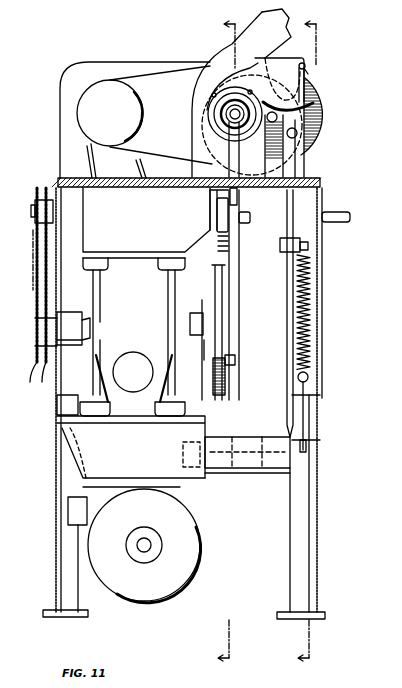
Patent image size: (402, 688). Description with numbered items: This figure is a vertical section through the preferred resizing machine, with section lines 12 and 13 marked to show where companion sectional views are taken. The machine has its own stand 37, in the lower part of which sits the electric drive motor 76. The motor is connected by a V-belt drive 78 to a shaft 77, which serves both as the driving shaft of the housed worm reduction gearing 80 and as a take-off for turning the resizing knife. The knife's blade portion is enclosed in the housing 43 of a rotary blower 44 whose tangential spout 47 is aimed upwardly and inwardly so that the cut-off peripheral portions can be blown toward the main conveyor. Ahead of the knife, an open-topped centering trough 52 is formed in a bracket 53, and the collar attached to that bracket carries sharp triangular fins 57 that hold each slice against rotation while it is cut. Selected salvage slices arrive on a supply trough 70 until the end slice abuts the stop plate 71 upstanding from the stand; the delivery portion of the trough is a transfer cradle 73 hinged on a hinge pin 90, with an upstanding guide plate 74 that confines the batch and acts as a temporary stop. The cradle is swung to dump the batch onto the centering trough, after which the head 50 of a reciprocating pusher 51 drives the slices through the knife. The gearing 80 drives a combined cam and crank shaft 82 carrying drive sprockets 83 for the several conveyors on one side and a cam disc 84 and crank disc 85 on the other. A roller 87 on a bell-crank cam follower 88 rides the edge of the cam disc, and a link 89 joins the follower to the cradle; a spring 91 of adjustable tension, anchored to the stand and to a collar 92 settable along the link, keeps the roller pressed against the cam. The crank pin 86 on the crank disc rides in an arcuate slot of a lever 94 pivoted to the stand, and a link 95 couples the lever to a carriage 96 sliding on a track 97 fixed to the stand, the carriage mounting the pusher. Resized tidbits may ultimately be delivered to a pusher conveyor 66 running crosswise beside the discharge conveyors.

The section line 12- 12 is at (311, 344).
The section line 13- 13 is at (230, 344).
The stand 37 is at (55, 516).
The housing 43 is at (186, 103).
The rotary blower 44 is at (177, 136).
The tangential spout 47 is at (262, 40).
The head 50 is at (238, 85).
The reciprocating pusher 51 is at (228, 152).
The centering trough 52 is at (217, 108).
The bracket 53 is at (196, 178).
The fins 57 is at (233, 101).
The pusher conveyor 66 is at (328, 104).
The supply trough 70 is at (306, 94).
The stop plate 71 is at (271, 72).
The transfer cradle 73 is at (299, 92).
The guide plate 74 is at (322, 118).
The drive motor 76 is at (198, 547).
The shaft 77 is at (336, 211).
The V-belt drive 78 is at (176, 402).
The reduction gearing 80 is at (126, 331).
The cam and crank shaft 82 is at (202, 352).
The drive sprockets 83 is at (36, 288).
The cam disc 84 is at (202, 300).
The crank disc 85 is at (213, 266).
The crank pin 86 is at (236, 358).
The roller 87 is at (194, 314).
The cam follower 88 is at (260, 429).
The link 89 is at (286, 305).
The hinge pin 90 is at (277, 119).
The spring 91 is at (311, 317).
The collar 92 is at (279, 246).
The lever 94 is at (240, 277).
The link 95 is at (244, 222).
The carriage 96 is at (238, 197).
The slide 97 is at (211, 213).